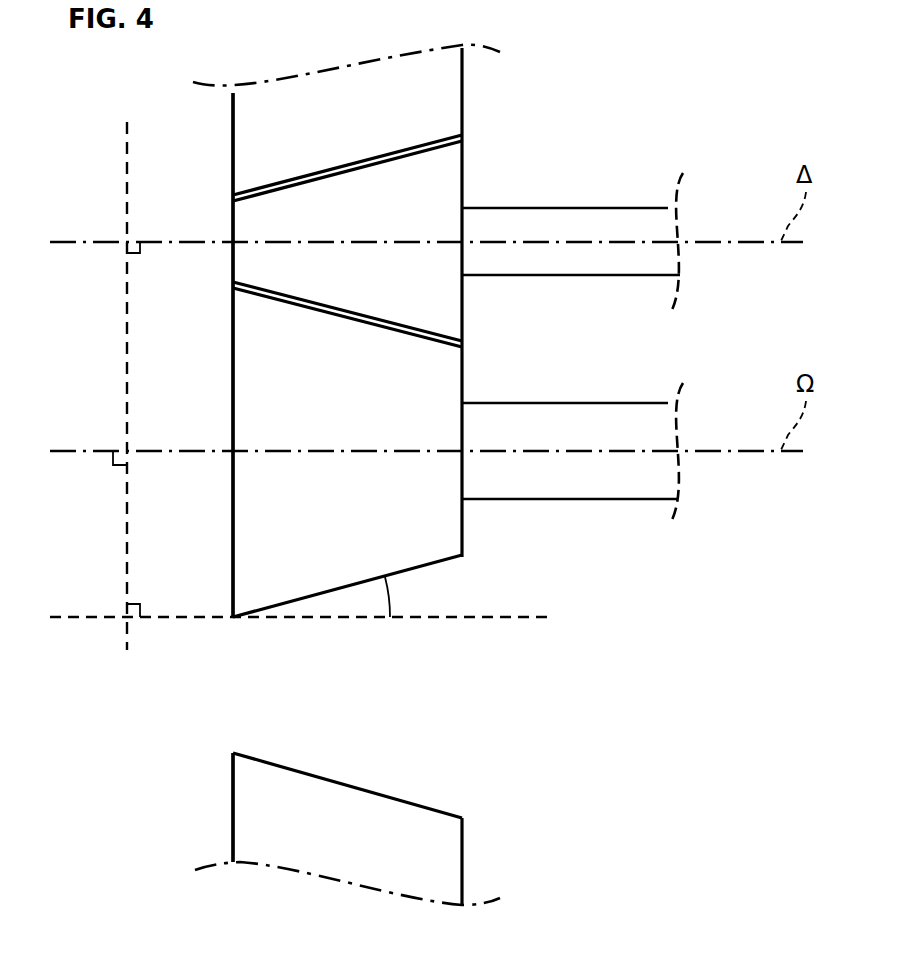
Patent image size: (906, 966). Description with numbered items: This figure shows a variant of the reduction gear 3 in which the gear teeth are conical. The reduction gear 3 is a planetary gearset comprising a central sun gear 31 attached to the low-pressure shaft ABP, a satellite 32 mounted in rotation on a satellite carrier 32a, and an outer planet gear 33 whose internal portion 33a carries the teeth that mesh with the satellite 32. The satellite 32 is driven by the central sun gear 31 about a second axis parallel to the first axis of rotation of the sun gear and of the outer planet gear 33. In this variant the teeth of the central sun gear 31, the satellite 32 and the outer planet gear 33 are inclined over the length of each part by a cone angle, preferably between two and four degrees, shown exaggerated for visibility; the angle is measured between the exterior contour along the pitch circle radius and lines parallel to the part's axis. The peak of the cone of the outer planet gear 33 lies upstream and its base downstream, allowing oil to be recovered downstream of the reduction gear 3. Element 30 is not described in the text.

The reduction gear 3 is at (582, 742).
The blade root 30 is at (464, 862).
The central sun gear 31 is at (252, 398).
The satellite 32 is at (252, 262).
The satellite carrier 32a is at (565, 222).
The outer planet gear 33 is at (464, 90).
The internal portion 33a is at (251, 139).
The low-pressure shaft ABP is at (566, 424).